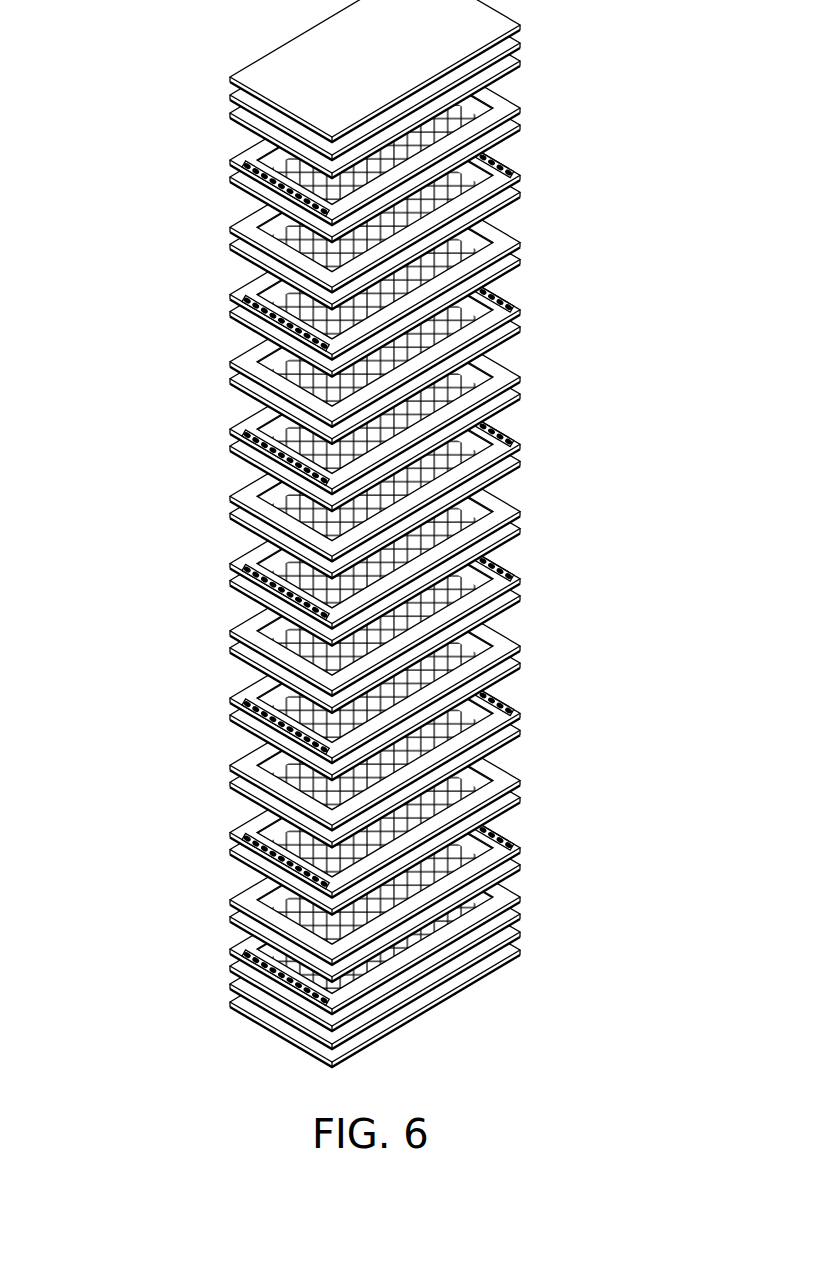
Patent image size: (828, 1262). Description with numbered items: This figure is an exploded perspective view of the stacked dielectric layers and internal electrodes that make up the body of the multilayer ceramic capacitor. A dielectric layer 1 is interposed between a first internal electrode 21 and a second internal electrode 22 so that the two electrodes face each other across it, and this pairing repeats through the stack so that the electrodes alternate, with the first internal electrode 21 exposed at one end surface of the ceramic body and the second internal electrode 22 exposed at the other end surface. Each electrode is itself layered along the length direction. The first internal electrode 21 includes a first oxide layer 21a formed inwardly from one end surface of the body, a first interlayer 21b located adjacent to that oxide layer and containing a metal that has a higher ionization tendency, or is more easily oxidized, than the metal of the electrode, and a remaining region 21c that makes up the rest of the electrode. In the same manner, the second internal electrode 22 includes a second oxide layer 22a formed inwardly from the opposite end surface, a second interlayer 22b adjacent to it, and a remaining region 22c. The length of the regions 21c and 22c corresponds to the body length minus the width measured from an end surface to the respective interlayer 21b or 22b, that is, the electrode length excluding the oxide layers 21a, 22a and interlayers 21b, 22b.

The dielectric layer 1 is at (383, 533).
The first internal electrode 21 is at (477, 279).
The first oxide layer 21a is at (508, 288).
The first interlayer 21b is at (477, 308).
The region of the first internal electrode 21c is at (514, 191).
The second internal electrode 22 is at (281, 121).
The second oxide layer 22a is at (247, 195).
The second interlayer 22b is at (258, 166).
The region of the second internal electrode 22c is at (280, 143).